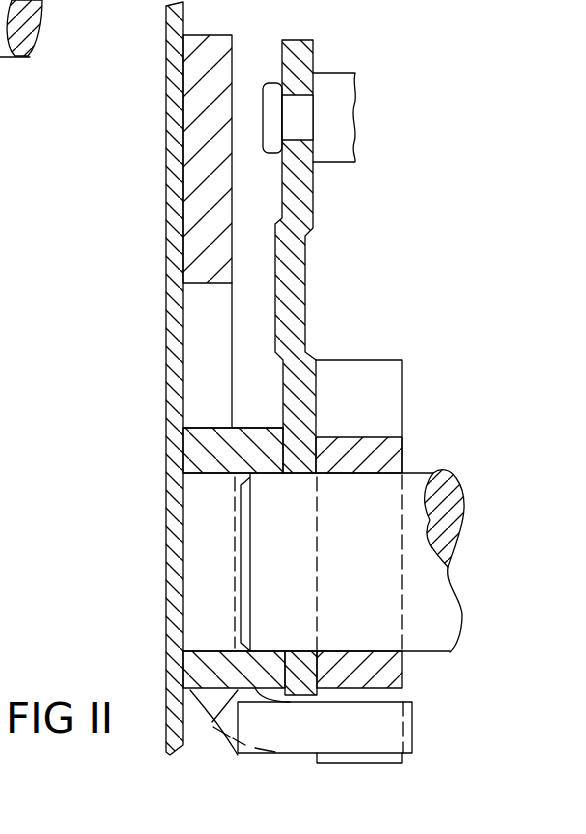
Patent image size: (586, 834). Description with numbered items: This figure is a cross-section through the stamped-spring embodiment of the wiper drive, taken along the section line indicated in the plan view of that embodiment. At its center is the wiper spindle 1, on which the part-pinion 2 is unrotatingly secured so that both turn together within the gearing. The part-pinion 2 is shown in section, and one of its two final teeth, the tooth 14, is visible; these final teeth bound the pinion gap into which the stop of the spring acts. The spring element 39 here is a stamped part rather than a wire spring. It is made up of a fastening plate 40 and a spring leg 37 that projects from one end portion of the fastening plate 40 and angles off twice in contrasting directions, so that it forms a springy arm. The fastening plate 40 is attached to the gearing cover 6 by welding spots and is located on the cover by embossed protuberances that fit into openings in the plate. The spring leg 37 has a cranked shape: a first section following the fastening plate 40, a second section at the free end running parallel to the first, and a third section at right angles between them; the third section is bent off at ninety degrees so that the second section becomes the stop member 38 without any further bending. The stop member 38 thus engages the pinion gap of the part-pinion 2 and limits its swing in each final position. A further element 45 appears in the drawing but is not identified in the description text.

The wiper spindle 1 is at (440, 548).
The part-pinion 2 is at (388, 455).
The gearing cover 6 is at (175, 340).
The final tooth 14 is at (373, 763).
The spring leg 37 is at (202, 407).
The stop member 38 is at (390, 717).
The spring element 39 is at (262, 202).
The fastening plate 40 is at (202, 108).
The fragment 45 is at (21, 64).